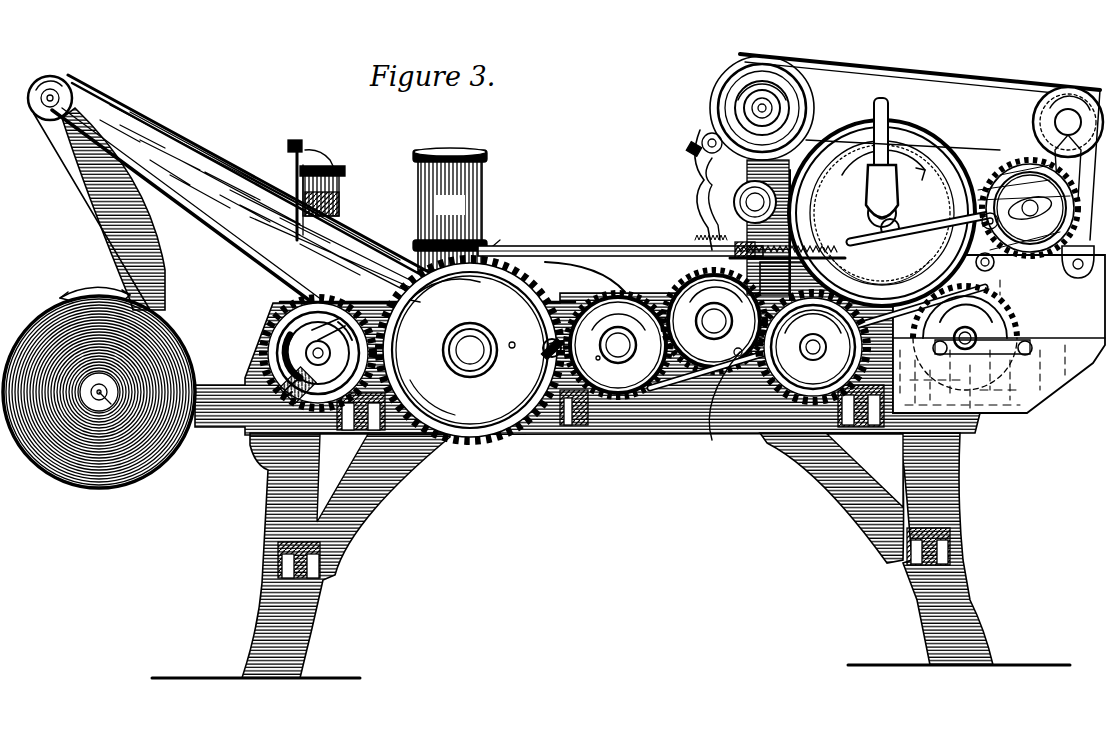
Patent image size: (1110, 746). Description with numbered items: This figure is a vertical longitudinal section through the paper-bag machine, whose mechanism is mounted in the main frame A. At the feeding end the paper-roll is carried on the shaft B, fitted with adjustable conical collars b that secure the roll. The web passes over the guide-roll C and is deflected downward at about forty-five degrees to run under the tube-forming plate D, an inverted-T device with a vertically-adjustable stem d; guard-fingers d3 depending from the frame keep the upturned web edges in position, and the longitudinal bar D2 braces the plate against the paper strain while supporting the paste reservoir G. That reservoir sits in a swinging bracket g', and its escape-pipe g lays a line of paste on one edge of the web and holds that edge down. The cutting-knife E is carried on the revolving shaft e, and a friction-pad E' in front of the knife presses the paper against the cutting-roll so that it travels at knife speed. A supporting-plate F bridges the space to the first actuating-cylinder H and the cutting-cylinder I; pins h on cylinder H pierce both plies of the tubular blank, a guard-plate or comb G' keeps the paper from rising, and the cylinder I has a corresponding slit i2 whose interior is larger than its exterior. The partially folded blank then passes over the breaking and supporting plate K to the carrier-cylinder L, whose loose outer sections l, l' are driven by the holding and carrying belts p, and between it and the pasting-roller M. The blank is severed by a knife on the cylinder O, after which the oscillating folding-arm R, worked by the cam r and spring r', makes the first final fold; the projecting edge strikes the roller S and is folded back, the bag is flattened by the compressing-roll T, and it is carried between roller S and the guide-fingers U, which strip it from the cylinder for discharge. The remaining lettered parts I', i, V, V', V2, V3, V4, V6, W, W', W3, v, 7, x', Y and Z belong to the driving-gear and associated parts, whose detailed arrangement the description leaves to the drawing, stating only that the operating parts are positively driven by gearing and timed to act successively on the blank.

The main frame A is at (611, 470).
The shaft B is at (182, 448).
The adjustable conical collars b is at (95, 400).
The guide-roll C is at (72, 96).
The tube-forming plate D is at (313, 190).
The vertically-adjustable stem d is at (292, 196).
The guard-fingers d3 is at (330, 178).
The longitudinal bar D2 is at (622, 236).
The cutting-knife E is at (318, 367).
The friction-pad E' is at (252, 355).
The revolving shaft e is at (314, 361).
The gear wheel V3 is at (349, 349).
The supporting-plate F is at (470, 350).
The gear wheel V2 is at (432, 397).
The paste reservoir G is at (450, 209).
The feed-tube g is at (507, 331).
The swinging bracket g' is at (501, 238).
The guard-plate G' is at (585, 277).
The pins h is at (606, 432).
The first actuating-cylinder H is at (618, 345).
The cutting-cylinder I is at (714, 321).
The roller pin I' is at (737, 337).
The link i is at (730, 396).
The slit i2 is at (599, 367).
The gear wheel V is at (714, 314).
The gear wheel V' is at (618, 339).
The breaking and supporting plate K is at (915, 342).
The outer section l is at (817, 345).
The carrier-cylinder L is at (882, 202).
The outer section l' is at (935, 220).
The pasting-roller M is at (1015, 313).
The gear wheel V6 is at (1020, 291).
The cylinder O is at (1027, 215).
The holding and carrying belts p is at (968, 145).
The oscillating folding-arm R is at (876, 105).
The cam r is at (1003, 215).
The spring r' is at (821, 227).
The roller S is at (800, 92).
The compressing-roll T is at (700, 140).
The guide-fingers U is at (920, 68).
The pin v is at (1023, 145).
The pin 7 is at (1025, 130).
The roller W is at (804, 213).
The gear wheel W' is at (813, 347).
The roller W3 is at (733, 196).
The gear wheel V4 is at (808, 403).
The pulley housing x' is at (820, 103).
The bracket Y is at (1085, 242).
The pulley Z is at (1068, 163).